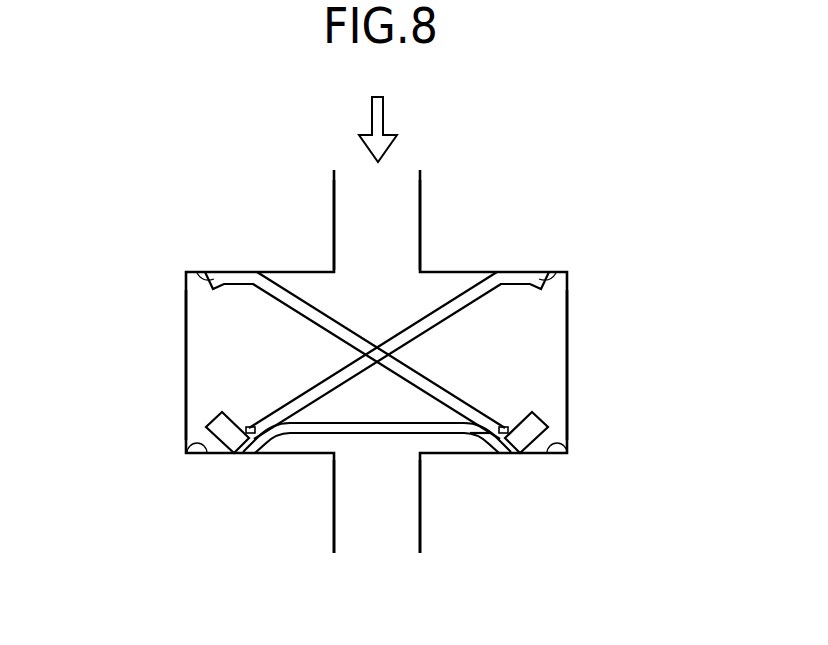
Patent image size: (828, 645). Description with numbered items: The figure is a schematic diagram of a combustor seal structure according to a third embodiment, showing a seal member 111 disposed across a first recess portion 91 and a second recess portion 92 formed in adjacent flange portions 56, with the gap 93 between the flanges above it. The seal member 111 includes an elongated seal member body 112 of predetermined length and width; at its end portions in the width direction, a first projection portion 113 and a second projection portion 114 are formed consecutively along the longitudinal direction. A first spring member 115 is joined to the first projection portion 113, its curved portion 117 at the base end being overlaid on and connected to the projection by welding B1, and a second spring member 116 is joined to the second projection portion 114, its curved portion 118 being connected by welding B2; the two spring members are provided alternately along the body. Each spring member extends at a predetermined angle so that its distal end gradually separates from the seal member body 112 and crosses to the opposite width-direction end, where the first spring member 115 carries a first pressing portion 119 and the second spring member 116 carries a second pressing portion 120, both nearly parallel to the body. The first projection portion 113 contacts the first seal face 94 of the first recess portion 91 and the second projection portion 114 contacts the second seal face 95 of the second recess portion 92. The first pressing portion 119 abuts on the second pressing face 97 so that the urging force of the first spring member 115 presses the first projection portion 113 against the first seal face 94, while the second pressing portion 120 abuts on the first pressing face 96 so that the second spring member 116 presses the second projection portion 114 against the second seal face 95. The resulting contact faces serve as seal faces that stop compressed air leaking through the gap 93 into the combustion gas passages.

The flange portion 56 is at (91, 190).
The first recess portion 91 is at (193, 329).
The second recess portion 92 is at (572, 332).
The gap 93 is at (400, 184).
The first seal face 94 is at (185, 445).
The second seal face 95 is at (568, 445).
The first pressing face 96 is at (200, 275).
The second pressing face 97 is at (554, 275).
The seal member 111 is at (385, 296).
The seal member body 112 is at (388, 430).
The first projection portion 113 is at (262, 442).
The second projection portion 114 is at (498, 457).
The first spring member 115 is at (326, 382).
The second spring member 116 is at (432, 382).
The curved portion 117 is at (240, 436).
The curved portion 118 is at (518, 435).
The first pressing portion 119 is at (513, 284).
The second pressing portion 120 is at (241, 284).
The welding B1 is at (246, 427).
The welding B2 is at (508, 427).